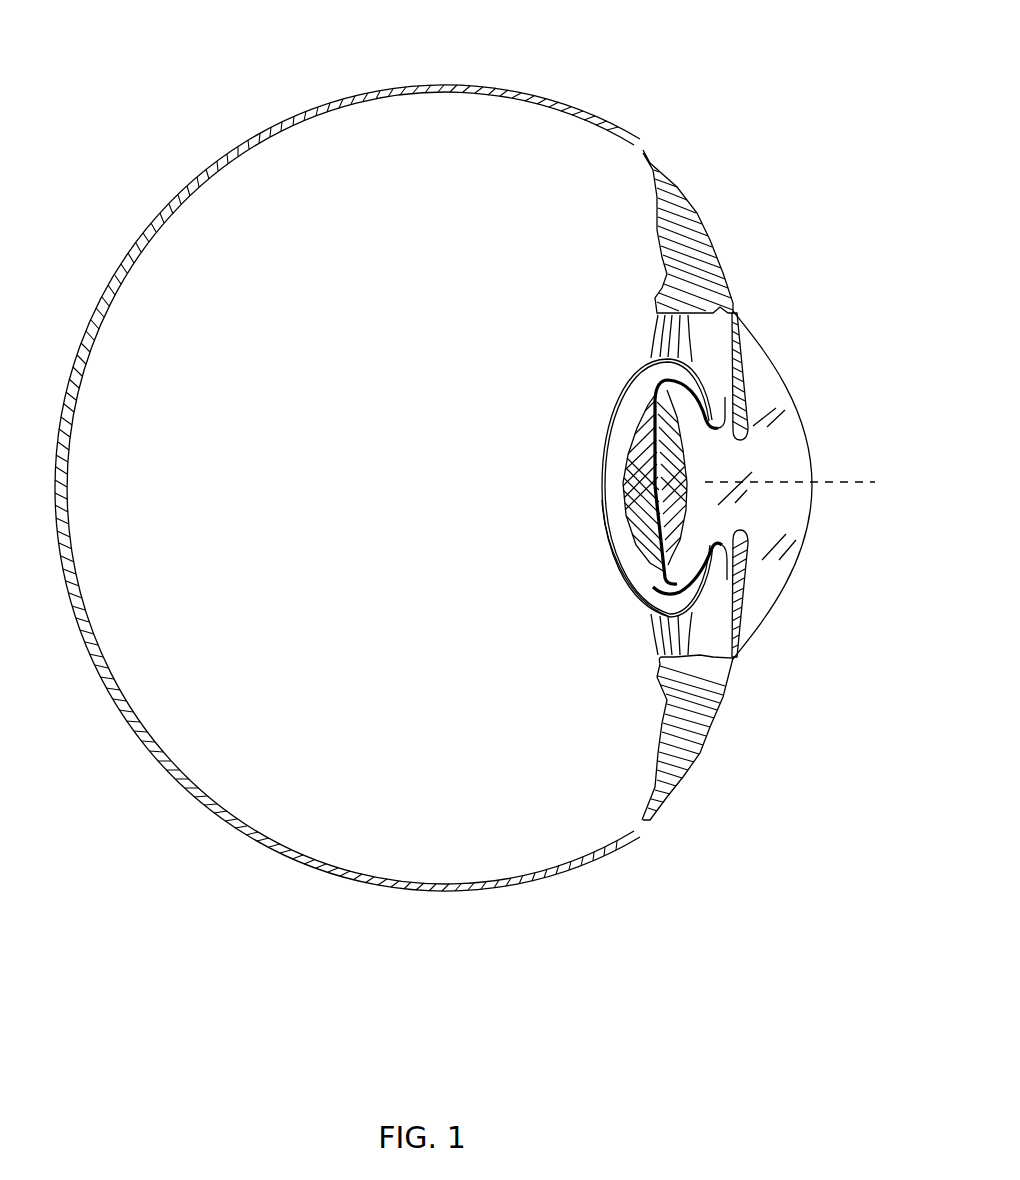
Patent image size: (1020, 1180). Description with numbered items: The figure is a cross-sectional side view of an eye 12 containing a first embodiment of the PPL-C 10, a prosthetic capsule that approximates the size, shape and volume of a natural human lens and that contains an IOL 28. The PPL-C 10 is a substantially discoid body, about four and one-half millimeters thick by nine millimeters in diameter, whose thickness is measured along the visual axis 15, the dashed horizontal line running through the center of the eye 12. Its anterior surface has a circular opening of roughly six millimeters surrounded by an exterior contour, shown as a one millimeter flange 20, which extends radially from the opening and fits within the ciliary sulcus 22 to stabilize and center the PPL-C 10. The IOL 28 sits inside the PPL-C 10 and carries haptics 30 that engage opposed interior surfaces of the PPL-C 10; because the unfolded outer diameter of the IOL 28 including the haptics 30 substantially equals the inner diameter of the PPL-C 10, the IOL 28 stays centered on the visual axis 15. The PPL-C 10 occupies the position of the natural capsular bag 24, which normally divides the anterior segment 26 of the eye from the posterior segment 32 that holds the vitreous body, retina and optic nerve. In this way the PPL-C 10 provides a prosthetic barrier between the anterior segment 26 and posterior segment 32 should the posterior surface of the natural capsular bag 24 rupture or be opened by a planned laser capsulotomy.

The PPL-C 10 is at (650, 403).
The eye 12 is at (645, 150).
The visual axis 15 is at (825, 482).
The flange 20 is at (727, 565).
The ciliary sulcus 22 is at (722, 603).
The natural capsular bag 24 is at (622, 580).
The anterior segment 26 is at (818, 250).
The IOL 28 is at (690, 478).
The haptics 30 is at (672, 396).
The posterior segment 32 is at (733, 944).